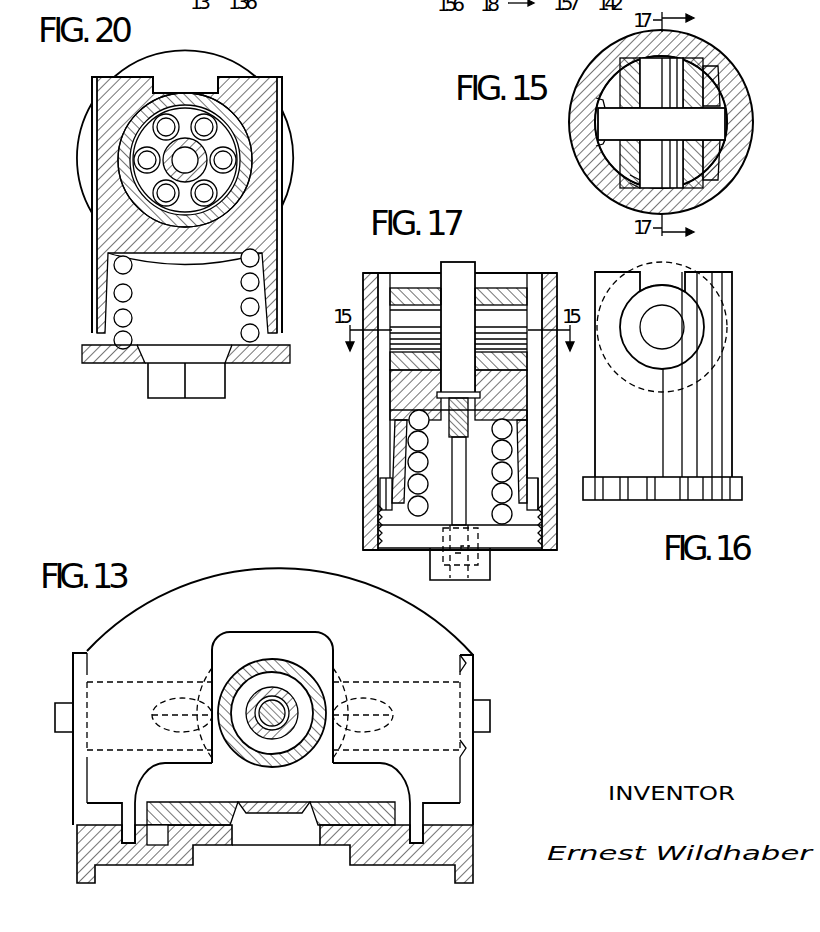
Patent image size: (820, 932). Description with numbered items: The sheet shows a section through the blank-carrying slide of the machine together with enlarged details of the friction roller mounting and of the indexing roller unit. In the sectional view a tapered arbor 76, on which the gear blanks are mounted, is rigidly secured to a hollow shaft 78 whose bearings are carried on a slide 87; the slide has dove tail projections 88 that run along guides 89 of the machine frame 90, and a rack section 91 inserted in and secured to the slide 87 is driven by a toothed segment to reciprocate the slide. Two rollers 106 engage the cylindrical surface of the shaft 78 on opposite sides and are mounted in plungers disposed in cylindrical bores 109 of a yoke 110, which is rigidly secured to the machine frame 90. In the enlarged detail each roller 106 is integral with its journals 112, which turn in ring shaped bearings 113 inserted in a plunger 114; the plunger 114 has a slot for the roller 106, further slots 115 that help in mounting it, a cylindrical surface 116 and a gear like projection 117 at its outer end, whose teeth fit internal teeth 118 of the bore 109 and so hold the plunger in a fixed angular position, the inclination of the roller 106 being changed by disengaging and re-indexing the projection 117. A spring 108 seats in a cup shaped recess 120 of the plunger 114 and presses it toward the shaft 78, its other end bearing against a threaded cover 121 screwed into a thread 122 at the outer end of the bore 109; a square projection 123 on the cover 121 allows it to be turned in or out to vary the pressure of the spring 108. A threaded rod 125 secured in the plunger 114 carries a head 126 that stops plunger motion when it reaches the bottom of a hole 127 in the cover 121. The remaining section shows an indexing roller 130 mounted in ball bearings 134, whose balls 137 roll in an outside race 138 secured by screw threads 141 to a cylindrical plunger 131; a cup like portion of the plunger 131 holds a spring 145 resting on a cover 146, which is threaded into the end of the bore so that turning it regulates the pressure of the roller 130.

In FIG. 13, the tapered arbor 76 is at (259, 695).
In FIG. 13, the hollow shaft 78 is at (282, 696).
In FIG. 13, the slide 87 is at (223, 806).
In FIG. 13, the dove tail projections 88 is at (152, 840).
In FIG. 13, the guides 89 is at (348, 847).
In FIG. 13, the machine frame 90 is at (78, 847).
In FIG. 13, the rack section 91 is at (280, 802).
In FIG. 15, the rollers 106 is at (707, 123).
In FIG. 17, the rollers 106 is at (459, 274).
In FIG. 16, the rollers 106 is at (672, 268).
In FIG. 13, the rollers 106 is at (153, 709).
In FIG. 17, the spring 108 is at (412, 439).
In FIG. 15, the cylindrical bores 109 is at (600, 150).
In FIG. 17, the cylindrical bores 109 is at (523, 388).
In FIG. 13, the cylindrical bores 109 is at (109, 682).
In FIG. 15, the yoke 110 is at (581, 131).
In FIG. 17, the yoke 110 is at (373, 469).
In FIG. 13, the yoke 110 is at (272, 572).
In FIG. 15, the journals 112 is at (655, 67).
In FIG. 17, the journals 112 is at (428, 315).
In FIG. 16, the journals 112 is at (664, 326).
In FIG. 15, the ring shaped bearings 113 is at (688, 95).
In FIG. 17, the ring shaped bearings 113 is at (410, 363).
In FIG. 16, the ring shaped bearings 113 is at (690, 326).
In FIG. 15, the plunger 114 is at (718, 103).
In FIG. 17, the plunger 114 is at (410, 385).
In FIG. 16, the plunger 114 is at (712, 405).
In FIG. 16, the slots 115 is at (654, 278).
In FIG. 15, the cylindrical surface 116 is at (738, 172).
In FIG. 17, the cylindrical surface 116 is at (525, 412).
In FIG. 16, the cylindrical surface 116 is at (733, 440).
In FIG. 17, the gear like projection 117 is at (537, 498).
In FIG. 16, the gear like projection 117 is at (718, 488).
In FIG. 15, the internal teeth 118 is at (647, 180).
In FIG. 17, the internal teeth 118 is at (532, 442).
In FIG. 17, the cup shaped recess 120 is at (401, 425).
In FIG. 17, the threaded cover 121 is at (515, 540).
In FIG. 13, the threaded cover 121 is at (464, 741).
In FIG. 17, the thread 122 is at (545, 538).
In FIG. 13, the thread 122 is at (472, 672).
In FIG. 17, the square projection 123 is at (463, 573).
In FIG. 13, the square projection 123 is at (488, 716).
In FIG. 17, the threaded rod 125 is at (457, 490).
In FIG. 17, the head 126 is at (468, 558).
In FIG. 17, the hole 127 is at (445, 550).
In FIG. 20, the roller 130 is at (204, 64).
In FIG. 20, the cylindrical plunger 131 is at (262, 93).
In FIG. 20, the ball bearings 134 is at (248, 148).
In FIG. 20, the balls 137 is at (140, 157).
In FIG. 20, the outside race 138 is at (236, 172).
In FIG. 20, the screw threads 141 is at (277, 204).
In FIG. 20, the spring 145 is at (127, 321).
In FIG. 20, the cover 146 is at (102, 358).